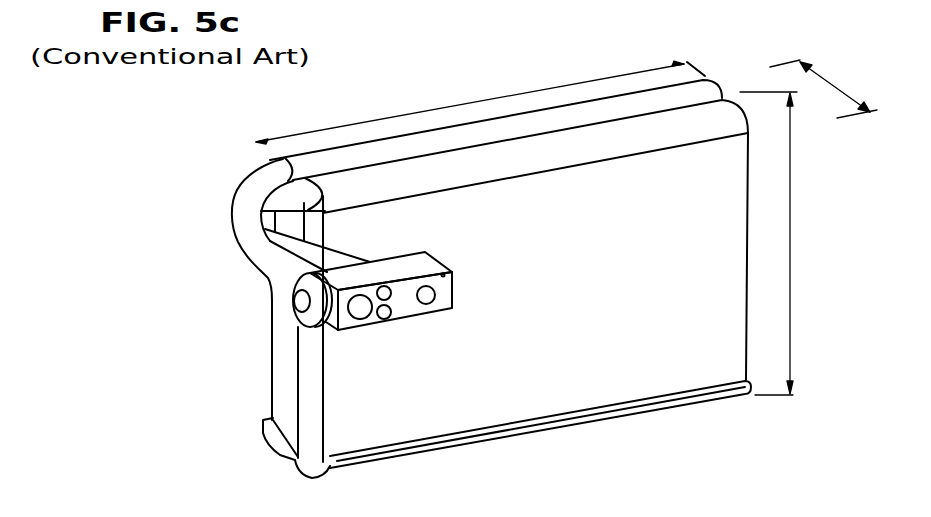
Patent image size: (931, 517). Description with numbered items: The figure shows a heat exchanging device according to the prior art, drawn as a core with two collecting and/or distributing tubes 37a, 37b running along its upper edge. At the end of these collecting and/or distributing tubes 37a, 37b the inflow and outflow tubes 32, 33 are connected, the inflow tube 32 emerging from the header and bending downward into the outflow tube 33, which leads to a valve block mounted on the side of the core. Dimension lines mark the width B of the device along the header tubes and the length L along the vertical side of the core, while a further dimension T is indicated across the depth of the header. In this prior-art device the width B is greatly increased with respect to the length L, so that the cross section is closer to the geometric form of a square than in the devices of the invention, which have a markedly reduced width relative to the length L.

The inflow tube 32 is at (251, 176).
The outflow tube 33 is at (262, 246).
The collecting and/or distributing tube 37a is at (384, 146).
The collecting and/or distributing tube 37b is at (593, 147).
The width B is at (453, 106).
The length L is at (789, 268).
The thickness of heat exchanger T is at (831, 84).